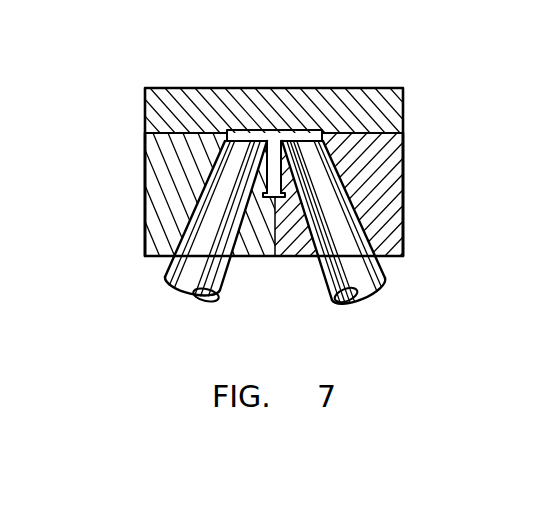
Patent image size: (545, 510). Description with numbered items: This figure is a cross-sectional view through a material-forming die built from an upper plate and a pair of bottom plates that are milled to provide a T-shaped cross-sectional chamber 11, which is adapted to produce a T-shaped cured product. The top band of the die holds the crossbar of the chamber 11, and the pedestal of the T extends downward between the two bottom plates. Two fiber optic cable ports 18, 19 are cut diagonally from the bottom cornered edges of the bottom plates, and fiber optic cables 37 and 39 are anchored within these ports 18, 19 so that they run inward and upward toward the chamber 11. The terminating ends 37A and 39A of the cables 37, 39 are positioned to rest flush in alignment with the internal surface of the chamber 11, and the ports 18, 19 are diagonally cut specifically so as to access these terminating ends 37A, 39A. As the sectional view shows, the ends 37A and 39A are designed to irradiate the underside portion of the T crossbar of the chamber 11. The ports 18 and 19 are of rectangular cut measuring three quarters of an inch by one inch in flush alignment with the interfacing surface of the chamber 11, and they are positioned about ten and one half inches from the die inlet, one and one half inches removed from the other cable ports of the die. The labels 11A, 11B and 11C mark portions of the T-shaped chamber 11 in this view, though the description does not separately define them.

The T-shaped cross-sectional chamber 11 is at (323, 112).
The right arm of T-shaped insert 11A is at (312, 130).
The left arm of T-shaped insert 11B is at (232, 130).
The foot of T-shaped insert stem 11C is at (285, 196).
The fiber optic cable port 18 is at (370, 240).
The fiber optic cable port 19 is at (178, 250).
The fiber optic cable 37 is at (174, 243).
The terminating end of fiber optic cable 37A is at (268, 180).
The fiber optic cable 39 is at (379, 240).
The terminating end of fiber optic cable 39A is at (282, 177).